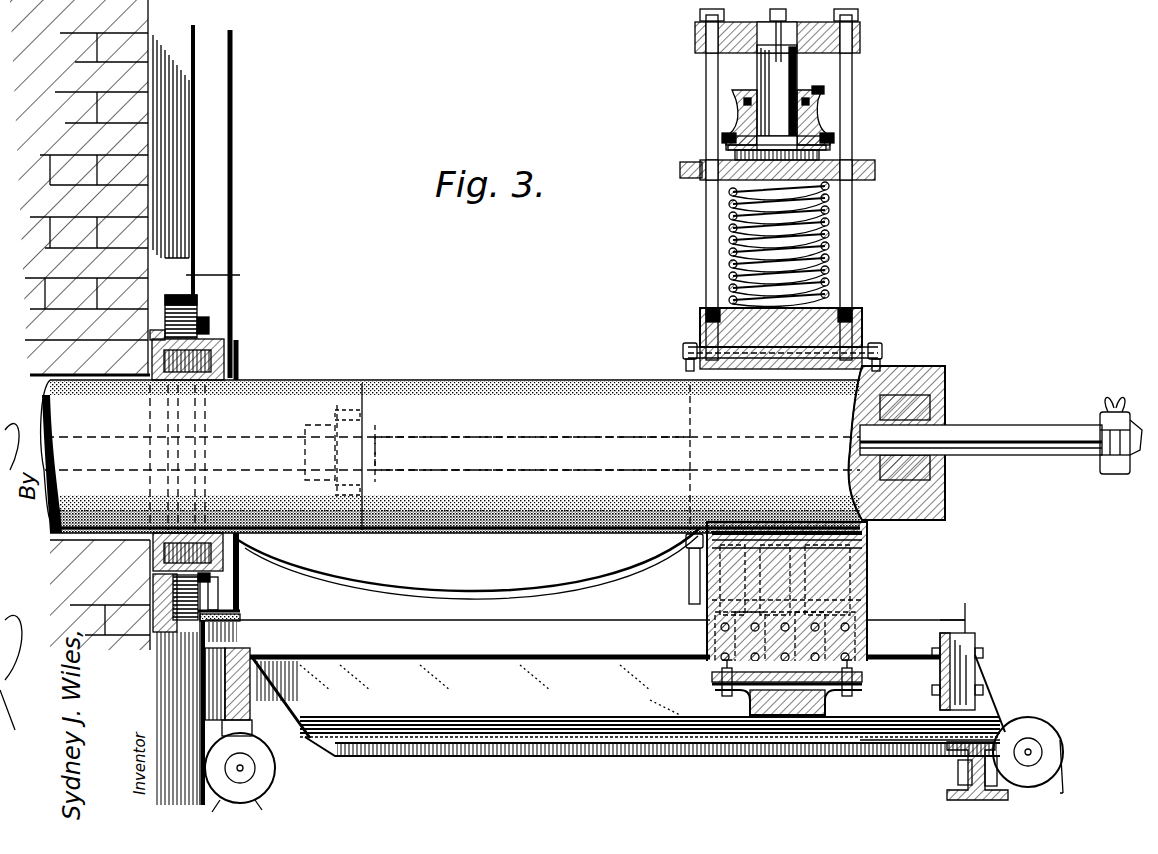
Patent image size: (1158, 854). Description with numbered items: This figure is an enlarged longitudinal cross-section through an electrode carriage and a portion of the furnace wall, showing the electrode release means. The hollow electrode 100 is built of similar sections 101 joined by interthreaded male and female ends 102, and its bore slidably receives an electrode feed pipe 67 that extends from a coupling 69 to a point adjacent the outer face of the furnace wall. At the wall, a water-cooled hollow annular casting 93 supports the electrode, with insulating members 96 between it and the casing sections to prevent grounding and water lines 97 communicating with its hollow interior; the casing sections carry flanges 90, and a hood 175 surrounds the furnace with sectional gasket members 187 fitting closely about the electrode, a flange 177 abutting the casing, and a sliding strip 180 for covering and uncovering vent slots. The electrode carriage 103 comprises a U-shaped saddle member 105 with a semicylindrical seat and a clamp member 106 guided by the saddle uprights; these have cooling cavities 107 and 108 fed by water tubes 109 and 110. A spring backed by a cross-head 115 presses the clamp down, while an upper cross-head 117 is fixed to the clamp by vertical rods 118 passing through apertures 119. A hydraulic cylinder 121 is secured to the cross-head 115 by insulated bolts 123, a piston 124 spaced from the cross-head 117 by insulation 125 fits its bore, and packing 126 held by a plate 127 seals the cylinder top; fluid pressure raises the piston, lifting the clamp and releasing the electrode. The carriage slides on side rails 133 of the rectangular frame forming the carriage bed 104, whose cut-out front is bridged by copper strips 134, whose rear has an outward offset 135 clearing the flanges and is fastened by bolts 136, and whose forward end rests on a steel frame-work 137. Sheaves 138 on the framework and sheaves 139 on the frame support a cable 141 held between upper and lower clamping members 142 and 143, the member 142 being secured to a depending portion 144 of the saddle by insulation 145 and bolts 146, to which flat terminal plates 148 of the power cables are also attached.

The hood 175 is at (235, 203).
The flanges 90 is at (192, 273).
The insulating members 96 is at (200, 310).
The water lines 97 is at (212, 322).
The hollow annular castings 93 is at (224, 352).
The sectional gasket members 187 is at (240, 372).
The hollow electrodes 100 is at (498, 380).
The electrode sections 101 is at (388, 378).
The interthreaded male and female ends 102 is at (362, 406).
The electrode feed pipe 67 is at (1012, 457).
The coupling 69 is at (1115, 474).
The cross-head 117 is at (860, 37).
The vertical rods 118 is at (712, 235).
The insulation 125 is at (772, 55).
The piston 124 is at (768, 72).
The hydraulic cylinder 121 is at (824, 107).
The packing 126 is at (822, 88).
The plate 127 is at (824, 95).
The insulated bolts 123 is at (728, 138).
The cross-head 115 is at (876, 170).
The apertures 119 is at (692, 182).
The clamp member 106 is at (866, 322).
The interior cavity 108 is at (864, 350).
The water tube 109 is at (690, 348).
The electrode carriage 103 is at (880, 581).
The interior cavity 107 is at (868, 535).
The saddle member 105 is at (866, 553).
The depending portion 144 is at (868, 597).
The water tube 110 is at (698, 557).
The side rails 133 is at (588, 620).
The carriage bed 104 is at (627, 708).
The cable 141 is at (540, 733).
The strip 180 is at (222, 612).
The flange 177 is at (225, 622).
The outward offset 135 is at (252, 655).
The bolts 136 is at (281, 697).
The sheaves 139 is at (265, 768).
The flat terminal plates 148 is at (716, 660).
The insulation 145 is at (720, 678).
The bolts 146 is at (728, 690).
The upper clamping member 142 is at (832, 698).
The copper strips 134 is at (975, 630).
The sheaves 138 is at (1058, 750).
The steel frame-work 137 is at (958, 765).
The lower clamping member 143 is at (852, 742).